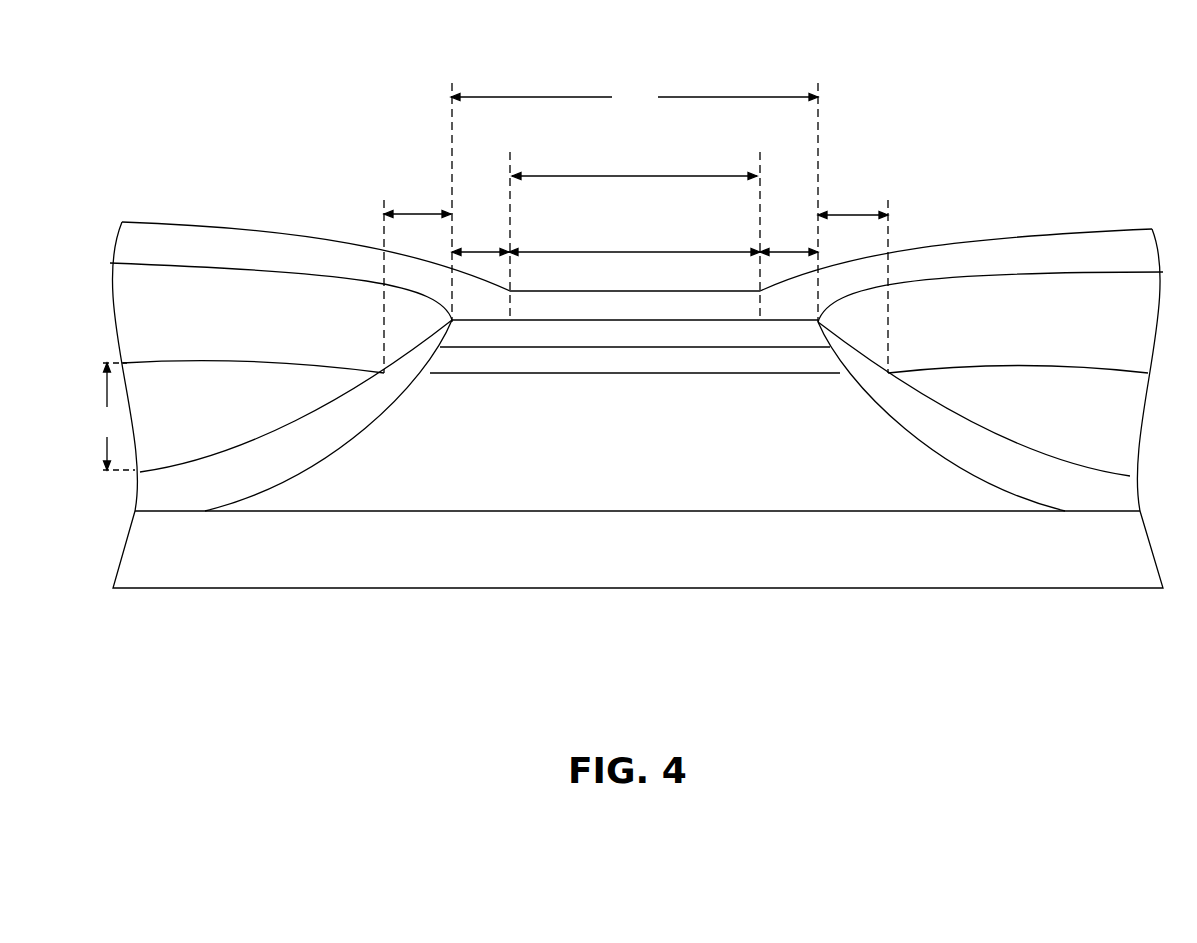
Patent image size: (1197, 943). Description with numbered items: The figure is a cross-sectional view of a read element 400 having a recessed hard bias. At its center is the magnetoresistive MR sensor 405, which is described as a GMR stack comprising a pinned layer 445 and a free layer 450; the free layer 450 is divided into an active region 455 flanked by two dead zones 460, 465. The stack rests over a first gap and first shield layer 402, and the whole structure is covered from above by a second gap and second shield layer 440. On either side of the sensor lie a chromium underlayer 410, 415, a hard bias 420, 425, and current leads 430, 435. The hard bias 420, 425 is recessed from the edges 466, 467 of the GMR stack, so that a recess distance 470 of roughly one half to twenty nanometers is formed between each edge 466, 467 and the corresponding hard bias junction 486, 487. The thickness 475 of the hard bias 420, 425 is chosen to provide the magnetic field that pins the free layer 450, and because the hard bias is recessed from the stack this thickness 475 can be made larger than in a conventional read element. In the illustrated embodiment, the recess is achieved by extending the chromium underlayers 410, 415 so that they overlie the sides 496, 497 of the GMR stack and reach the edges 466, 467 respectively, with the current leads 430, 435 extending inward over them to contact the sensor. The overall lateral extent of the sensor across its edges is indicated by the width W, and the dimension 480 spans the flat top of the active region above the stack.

The read element 400 is at (658, 40).
The first gap and first shield layer 402 is at (714, 560).
The MR sensor 405 is at (825, 518).
The chromium underlayer 410 is at (207, 500).
The chromium underlayer 415 is at (1119, 508).
The hard bias 420 is at (207, 436).
The hard bias 425 is at (1119, 450).
The current lead 430 is at (210, 340).
The current lead 435 is at (1119, 346).
The second gap and second shield layer 440 is at (142, 205).
The pinned layer 445 is at (635, 363).
The free layer 450 is at (635, 336).
The active region 455 is at (634, 241).
The dead zone 460 is at (480, 241).
The dead zone 465 is at (789, 241).
The edge of the GMR stack 466 is at (444, 318).
The edge of the GMR stack 467 is at (828, 320).
The recess distance 470 is at (636, 200).
The thickness of the hard bias 475 is at (111, 416).
The flat top width 480 is at (635, 234).
The hard bias junction 486 is at (378, 367).
The hard bias junction 487 is at (895, 366).
The side of the GMR stack 496 is at (347, 453).
The side of the GMR stack 497 is at (933, 460).
The sensor width W is at (634, 96).